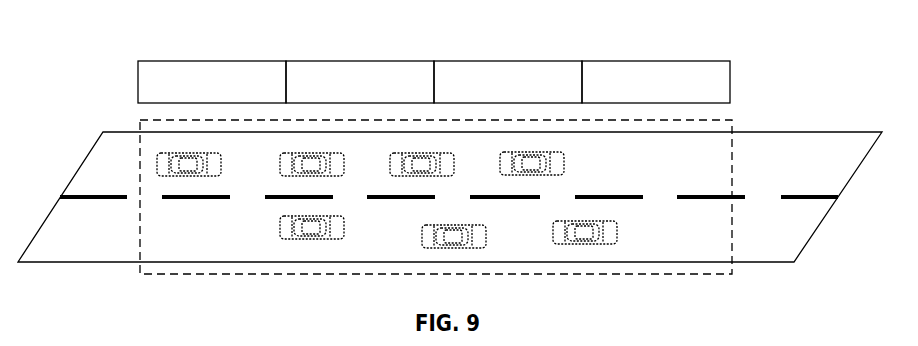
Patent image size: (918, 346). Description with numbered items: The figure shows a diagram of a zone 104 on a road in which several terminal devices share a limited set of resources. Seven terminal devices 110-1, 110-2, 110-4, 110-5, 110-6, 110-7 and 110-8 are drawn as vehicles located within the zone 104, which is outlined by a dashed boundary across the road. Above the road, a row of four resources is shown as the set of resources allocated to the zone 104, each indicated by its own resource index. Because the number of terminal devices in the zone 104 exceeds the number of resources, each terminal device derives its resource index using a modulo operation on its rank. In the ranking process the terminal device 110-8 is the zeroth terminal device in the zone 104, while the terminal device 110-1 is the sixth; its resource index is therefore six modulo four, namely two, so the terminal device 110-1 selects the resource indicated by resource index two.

The zone 104 is at (551, 275).
The terminal device 110-1 is at (572, 224).
The terminal device 110-2 is at (410, 155).
The terminal device 110-4 is at (300, 176).
The terminal device 110-5 is at (305, 239).
The terminal device 110-6 is at (520, 154).
The terminal device 110-7 is at (440, 227).
The terminal device 110-8 is at (187, 155).